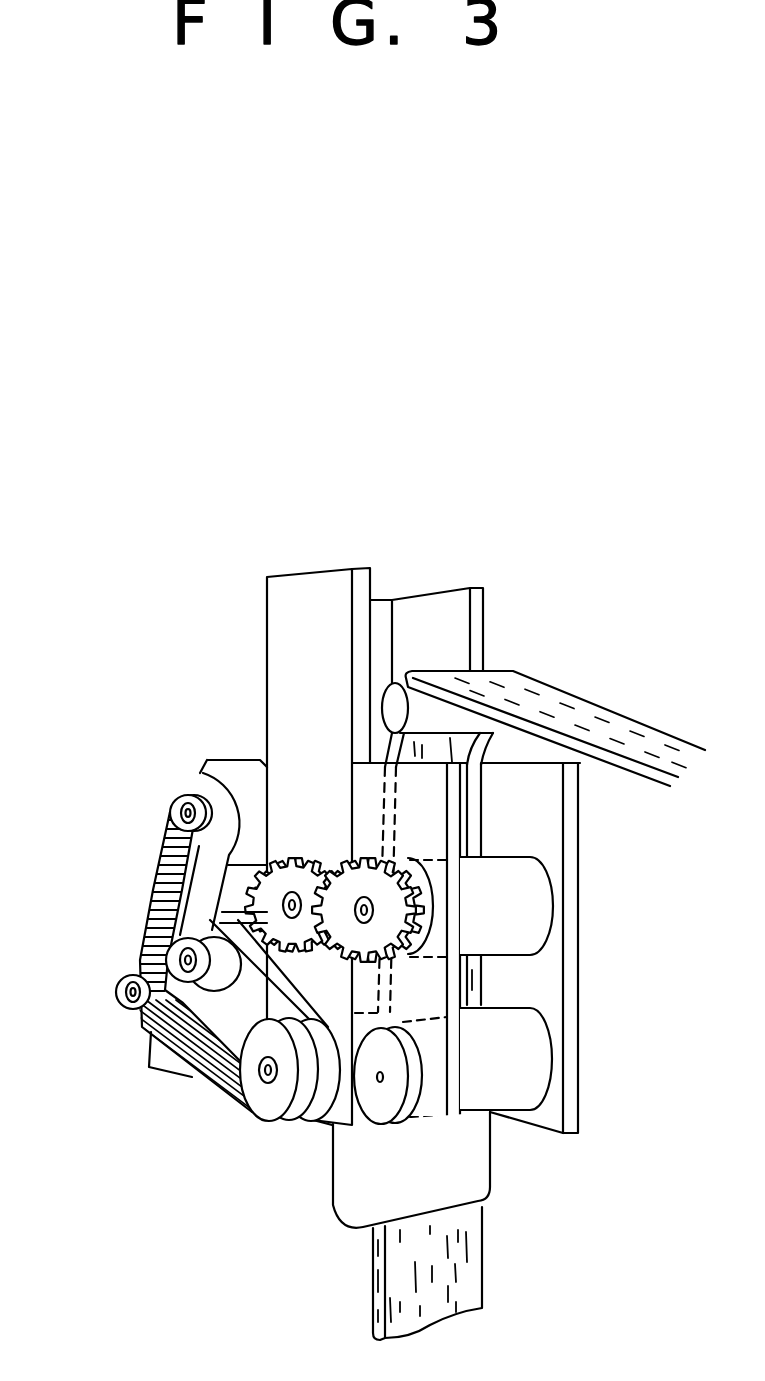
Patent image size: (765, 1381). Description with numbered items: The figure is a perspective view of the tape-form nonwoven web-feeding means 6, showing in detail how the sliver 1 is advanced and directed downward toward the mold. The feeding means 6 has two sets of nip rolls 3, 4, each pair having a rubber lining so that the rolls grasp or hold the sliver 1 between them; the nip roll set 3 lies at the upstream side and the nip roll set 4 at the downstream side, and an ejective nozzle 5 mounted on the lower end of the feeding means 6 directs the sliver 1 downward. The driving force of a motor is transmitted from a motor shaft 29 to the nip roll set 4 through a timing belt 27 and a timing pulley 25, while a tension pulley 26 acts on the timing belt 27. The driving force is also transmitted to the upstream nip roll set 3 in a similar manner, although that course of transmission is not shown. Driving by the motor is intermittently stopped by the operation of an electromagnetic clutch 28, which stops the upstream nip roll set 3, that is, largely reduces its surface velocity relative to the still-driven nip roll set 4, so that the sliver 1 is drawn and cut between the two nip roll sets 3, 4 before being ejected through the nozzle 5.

The sliver 1 is at (647, 738).
The nip roll set 3 is at (541, 905).
The nip roll set 4 is at (539, 1066).
The ejective nozzle 5 is at (477, 1176).
The feeding means 6 is at (238, 700).
The timing pulley 25 is at (258, 1118).
The tension pulley 26 is at (180, 945).
The timing belt 27 is at (178, 1048).
The electromagnetic clutch 28 is at (210, 762).
The motor shaft 29 is at (118, 994).